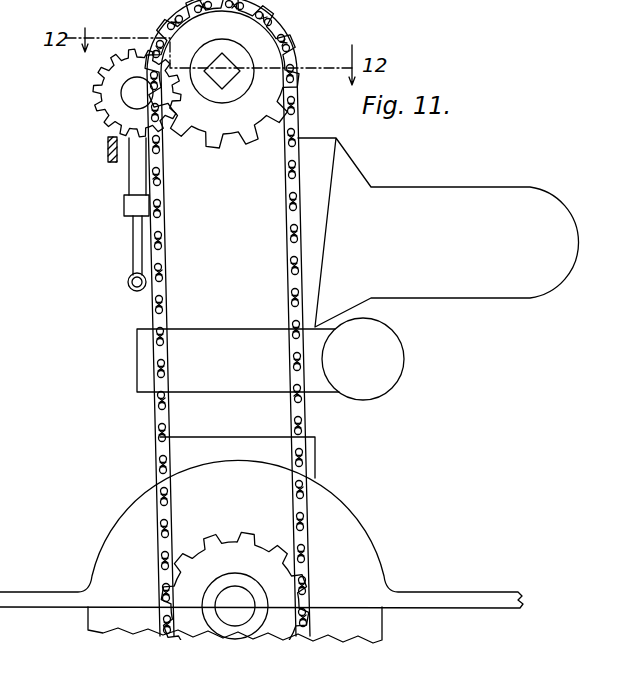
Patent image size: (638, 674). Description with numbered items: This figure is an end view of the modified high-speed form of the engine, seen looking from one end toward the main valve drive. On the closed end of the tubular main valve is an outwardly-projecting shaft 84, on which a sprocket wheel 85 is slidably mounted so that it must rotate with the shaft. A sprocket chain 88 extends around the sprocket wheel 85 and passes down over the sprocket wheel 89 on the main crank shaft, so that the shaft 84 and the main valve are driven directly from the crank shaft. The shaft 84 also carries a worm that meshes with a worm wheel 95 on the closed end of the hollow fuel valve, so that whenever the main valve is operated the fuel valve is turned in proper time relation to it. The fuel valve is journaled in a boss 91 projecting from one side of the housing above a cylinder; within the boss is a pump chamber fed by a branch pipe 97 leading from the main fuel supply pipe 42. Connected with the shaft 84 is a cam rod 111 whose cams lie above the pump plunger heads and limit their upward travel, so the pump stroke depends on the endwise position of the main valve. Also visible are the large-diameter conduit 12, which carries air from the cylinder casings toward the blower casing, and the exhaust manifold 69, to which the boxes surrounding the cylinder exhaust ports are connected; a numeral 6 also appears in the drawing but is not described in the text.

The shaft 6 is at (247, 584).
The conduit 12 is at (438, 232).
The main fuel supply pipe 42 is at (128, 285).
The exhaust manifold 69 is at (369, 395).
The shaft 84 is at (222, 53).
The sprocket wheel 85 is at (263, 98).
The sprocket chain 88 is at (163, 287).
The sprocket wheel 89 is at (227, 550).
The boss 91 is at (132, 182).
The worm wheel 95 is at (100, 97).
The branch pipe 97 is at (134, 247).
The cam rod 111 is at (108, 151).